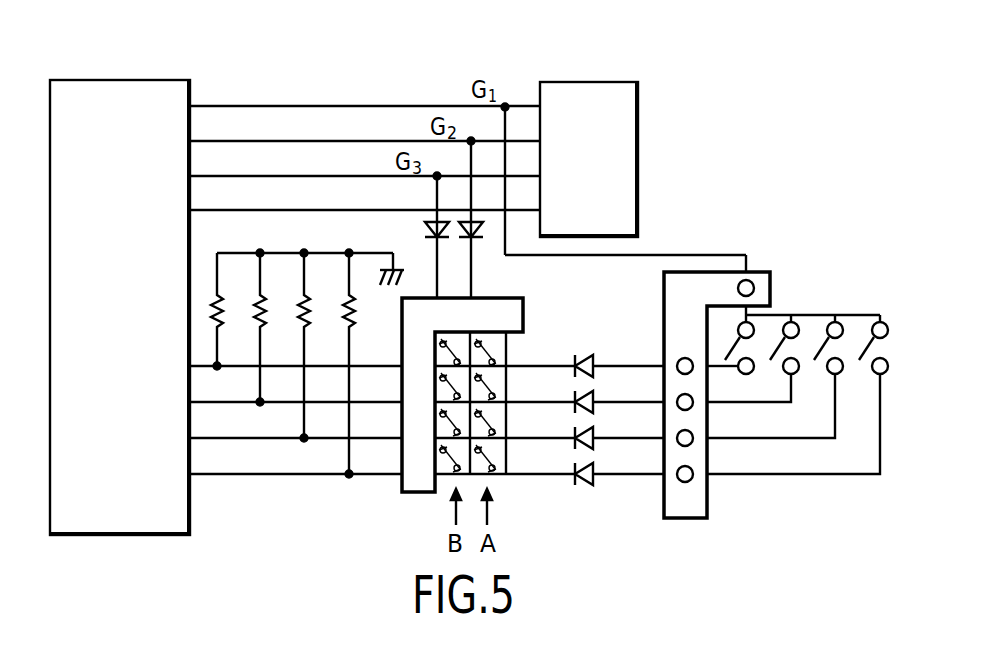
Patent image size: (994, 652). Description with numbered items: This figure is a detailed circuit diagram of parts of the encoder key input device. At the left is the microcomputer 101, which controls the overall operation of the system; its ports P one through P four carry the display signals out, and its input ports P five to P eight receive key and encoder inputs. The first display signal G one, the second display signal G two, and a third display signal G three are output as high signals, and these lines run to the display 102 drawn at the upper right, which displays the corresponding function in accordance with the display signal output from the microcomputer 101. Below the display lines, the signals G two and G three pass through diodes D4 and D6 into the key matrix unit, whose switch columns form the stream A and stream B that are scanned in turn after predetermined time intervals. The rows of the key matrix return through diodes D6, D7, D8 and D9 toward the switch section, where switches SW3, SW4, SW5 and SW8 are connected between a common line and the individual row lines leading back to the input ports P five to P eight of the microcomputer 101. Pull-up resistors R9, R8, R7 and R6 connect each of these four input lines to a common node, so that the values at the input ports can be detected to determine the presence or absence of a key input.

The microcomputer 101 is at (113, 80).
The display 102 is at (593, 93).
The diode D4 is at (418, 237).
The diode D6 is at (526, 259).
The diode D7 is at (563, 392).
The diode D8 is at (563, 428).
The diode D9 is at (563, 464).
The resistor R6 is at (363, 363).
The resistor R7 is at (318, 345).
The resistor R8 is at (275, 327).
The resistor R9 is at (232, 309).
The switch SW3 is at (747, 362).
The switch SW4 is at (770, 343).
The switch SW5 is at (792, 380).
The switch SW8 is at (806, 379).